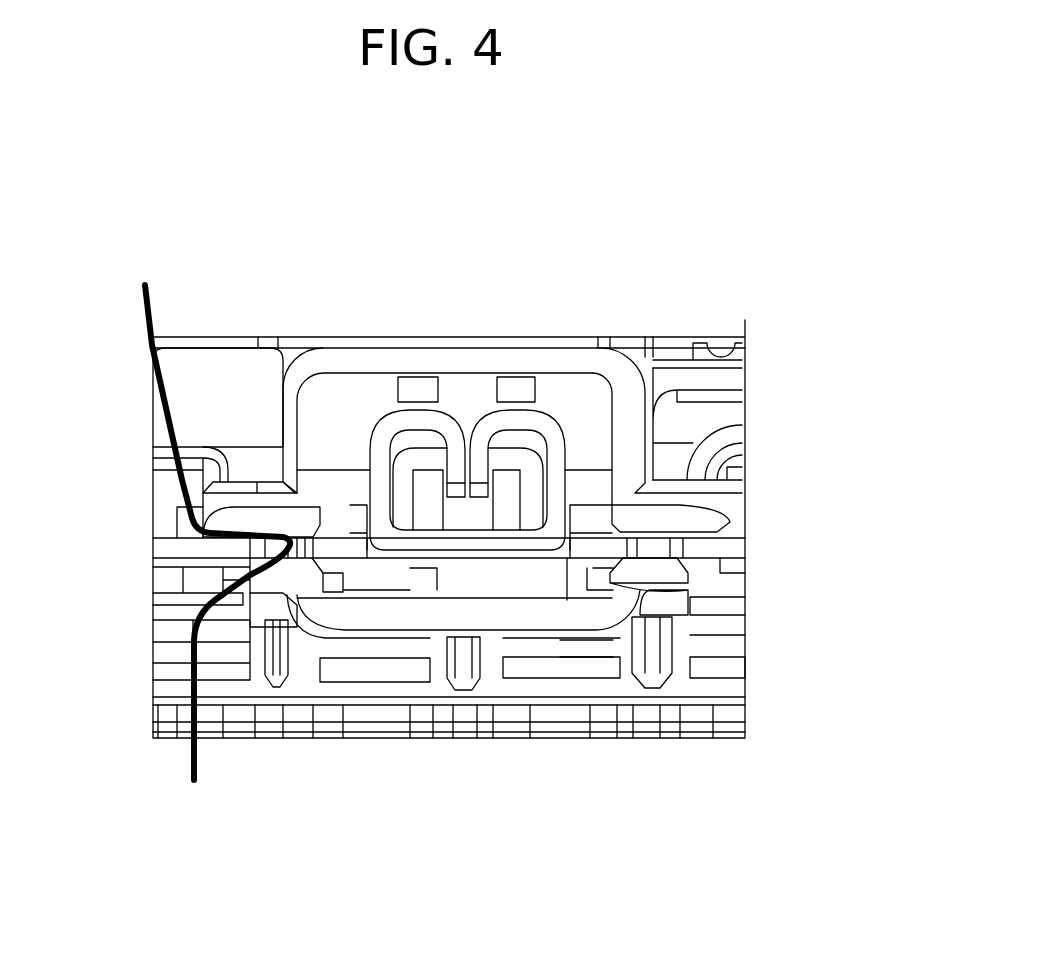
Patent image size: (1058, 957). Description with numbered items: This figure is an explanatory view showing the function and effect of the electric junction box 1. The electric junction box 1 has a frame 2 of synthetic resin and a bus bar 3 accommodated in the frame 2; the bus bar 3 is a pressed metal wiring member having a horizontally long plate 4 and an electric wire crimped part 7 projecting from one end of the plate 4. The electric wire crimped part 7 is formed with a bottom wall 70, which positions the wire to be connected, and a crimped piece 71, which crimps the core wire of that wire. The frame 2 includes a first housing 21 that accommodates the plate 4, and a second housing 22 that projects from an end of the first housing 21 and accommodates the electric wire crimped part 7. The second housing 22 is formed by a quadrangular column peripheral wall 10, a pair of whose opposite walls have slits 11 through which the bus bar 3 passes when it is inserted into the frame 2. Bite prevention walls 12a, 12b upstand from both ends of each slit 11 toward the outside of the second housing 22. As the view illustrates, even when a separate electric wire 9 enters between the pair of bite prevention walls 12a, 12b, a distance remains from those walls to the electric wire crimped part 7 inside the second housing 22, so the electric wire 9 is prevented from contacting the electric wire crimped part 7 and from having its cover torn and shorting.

The electric junction box 1 is at (704, 216).
The frame 2 is at (652, 318).
The bus bar 3 is at (735, 561).
The plate 4 is at (172, 548).
The electric wire crimped part 7 is at (549, 531).
The electric wire 9 is at (152, 306).
The peripheral wall 10 is at (582, 337).
The slit 11 is at (308, 562).
The bite prevention wall 12a is at (227, 480).
The bite prevention wall 12b is at (265, 608).
The first housing 21 is at (183, 633).
The second housing 22 is at (500, 653).
The bottom wall 70 is at (431, 556).
The crimped piece 71 is at (486, 427).